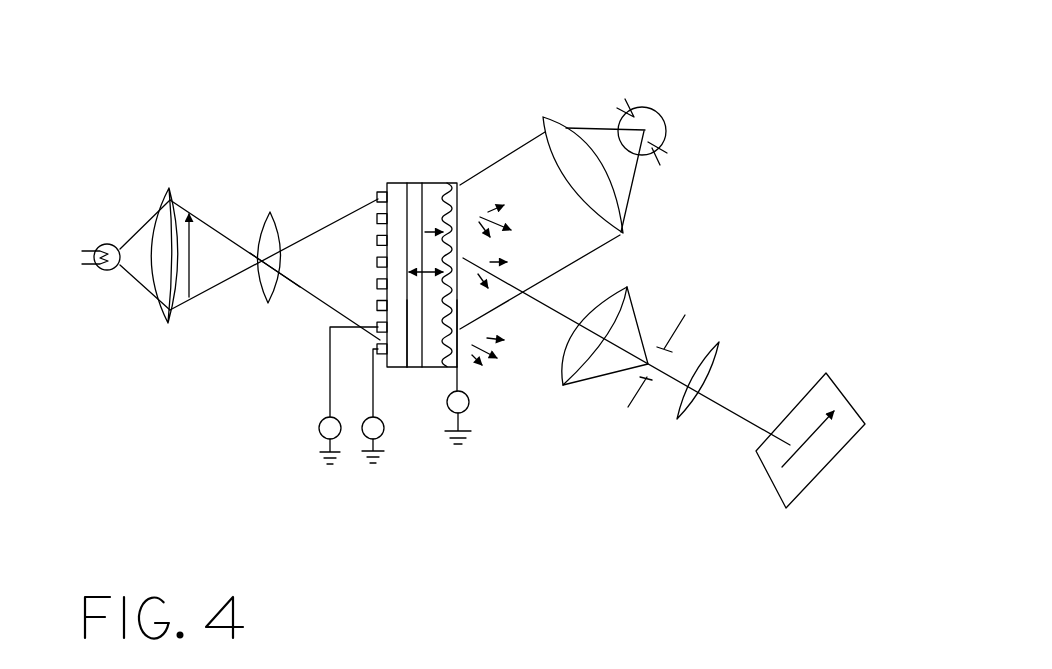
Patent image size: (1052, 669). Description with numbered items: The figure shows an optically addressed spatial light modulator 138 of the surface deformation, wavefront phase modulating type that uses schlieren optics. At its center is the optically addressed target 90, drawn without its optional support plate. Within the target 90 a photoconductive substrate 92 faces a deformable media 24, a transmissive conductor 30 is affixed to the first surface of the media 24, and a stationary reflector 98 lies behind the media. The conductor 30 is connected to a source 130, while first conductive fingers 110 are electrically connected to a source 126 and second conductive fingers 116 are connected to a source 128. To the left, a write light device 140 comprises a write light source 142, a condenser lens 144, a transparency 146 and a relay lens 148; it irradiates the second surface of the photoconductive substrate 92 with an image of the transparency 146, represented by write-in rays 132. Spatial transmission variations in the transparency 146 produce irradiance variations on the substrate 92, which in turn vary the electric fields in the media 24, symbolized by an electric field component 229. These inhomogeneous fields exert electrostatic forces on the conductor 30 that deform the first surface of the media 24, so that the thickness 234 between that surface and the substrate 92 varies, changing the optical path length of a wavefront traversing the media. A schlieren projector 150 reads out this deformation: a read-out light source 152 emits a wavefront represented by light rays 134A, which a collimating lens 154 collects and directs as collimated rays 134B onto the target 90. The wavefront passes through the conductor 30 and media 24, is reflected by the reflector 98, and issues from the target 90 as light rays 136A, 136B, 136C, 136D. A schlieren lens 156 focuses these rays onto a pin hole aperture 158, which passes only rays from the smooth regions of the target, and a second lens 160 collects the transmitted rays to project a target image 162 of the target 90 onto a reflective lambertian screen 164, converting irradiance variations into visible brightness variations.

The media 24 is at (437, 362).
The conductor 30 is at (458, 352).
The optically addressed target 90 is at (446, 170).
The photoconductive substrate 92 is at (400, 182).
The reflector 98 is at (420, 360).
The first conductive fingers 110 is at (378, 323).
The second conductive fingers 116 is at (380, 348).
The source 126 is at (318, 432).
The source 128 is at (360, 435).
The source 130 is at (470, 415).
The write-in rays 132 is at (297, 283).
The light rays 134A is at (587, 123).
The light rays 134B is at (522, 135).
The light rays 136A is at (497, 222).
The light rays 136B is at (550, 303).
The light rays 136C is at (495, 330).
The light rays 136D is at (492, 258).
The optically addressed spatial light modulator 138 is at (421, 173).
The write light device 140 is at (264, 191).
The write light source 142 is at (102, 272).
The condenser lens 144 is at (167, 320).
The transparency 146 is at (198, 279).
The relay lens 148 is at (167, 190).
The schlieren projector 150 is at (724, 128).
The read-out light source 152 is at (668, 120).
The collimating lens 154 is at (628, 228).
The schlieren lens 156 is at (570, 390).
The pin hole aperture 158 is at (682, 330).
The second lens 160 is at (697, 410).
The target image 162 is at (821, 437).
The screen 164 is at (830, 395).
The electric field component 229 is at (430, 222).
The thickness 234 is at (430, 265).